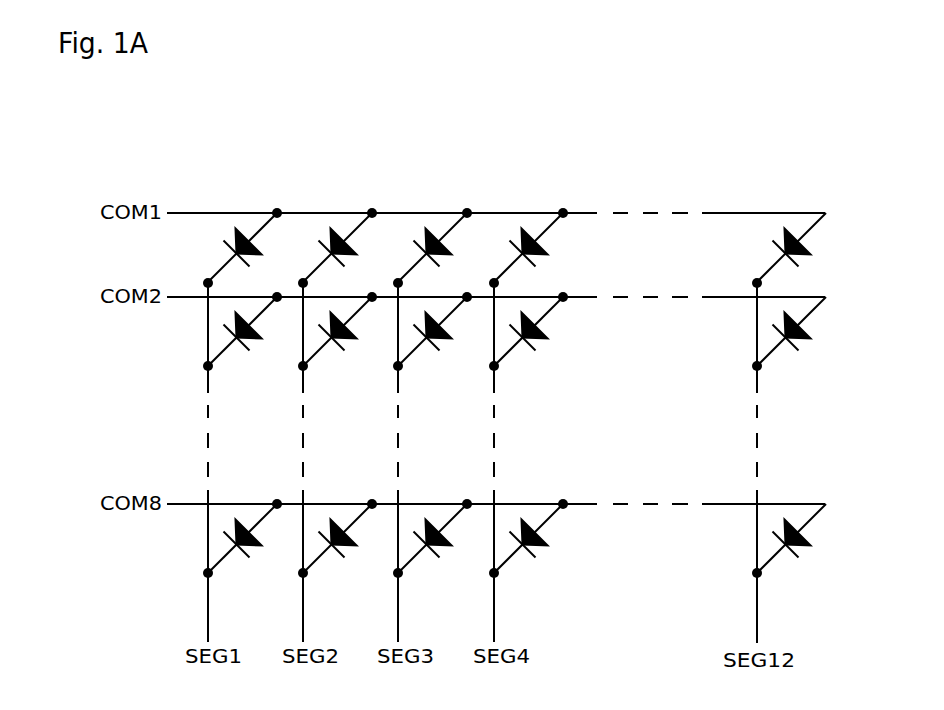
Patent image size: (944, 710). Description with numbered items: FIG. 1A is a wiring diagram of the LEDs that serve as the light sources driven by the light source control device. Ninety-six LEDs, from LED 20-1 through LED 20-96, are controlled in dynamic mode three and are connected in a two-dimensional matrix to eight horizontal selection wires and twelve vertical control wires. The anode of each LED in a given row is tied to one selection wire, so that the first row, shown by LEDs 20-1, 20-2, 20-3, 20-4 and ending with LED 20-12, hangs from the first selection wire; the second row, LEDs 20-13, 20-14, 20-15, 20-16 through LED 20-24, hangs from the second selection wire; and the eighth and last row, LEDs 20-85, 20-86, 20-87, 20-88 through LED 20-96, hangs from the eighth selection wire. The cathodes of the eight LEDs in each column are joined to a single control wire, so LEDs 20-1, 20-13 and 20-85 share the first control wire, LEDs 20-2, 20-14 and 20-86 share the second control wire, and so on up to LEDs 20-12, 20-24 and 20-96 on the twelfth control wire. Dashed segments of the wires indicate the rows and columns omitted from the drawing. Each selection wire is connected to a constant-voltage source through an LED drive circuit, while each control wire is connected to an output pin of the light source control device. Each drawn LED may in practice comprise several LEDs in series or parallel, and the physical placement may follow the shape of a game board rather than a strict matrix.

The LED 20-1 is at (237, 240).
The LED 20-2 is at (332, 240).
The LED 20-3 is at (427, 240).
The LED 20-4 is at (523, 240).
The LED 20-12 is at (784, 240).
The LED 20-13 is at (250, 338).
The LED 20-14 is at (345, 338).
The LED 20-15 is at (440, 338).
The LED 20-16 is at (536, 338).
The LED 20-24 is at (798, 344).
The LED 20-85 is at (250, 546).
The LED 20-86 is at (345, 546).
The LED 20-87 is at (440, 546).
The LED 20-88 is at (536, 546).
The LED 20-96 is at (798, 551).